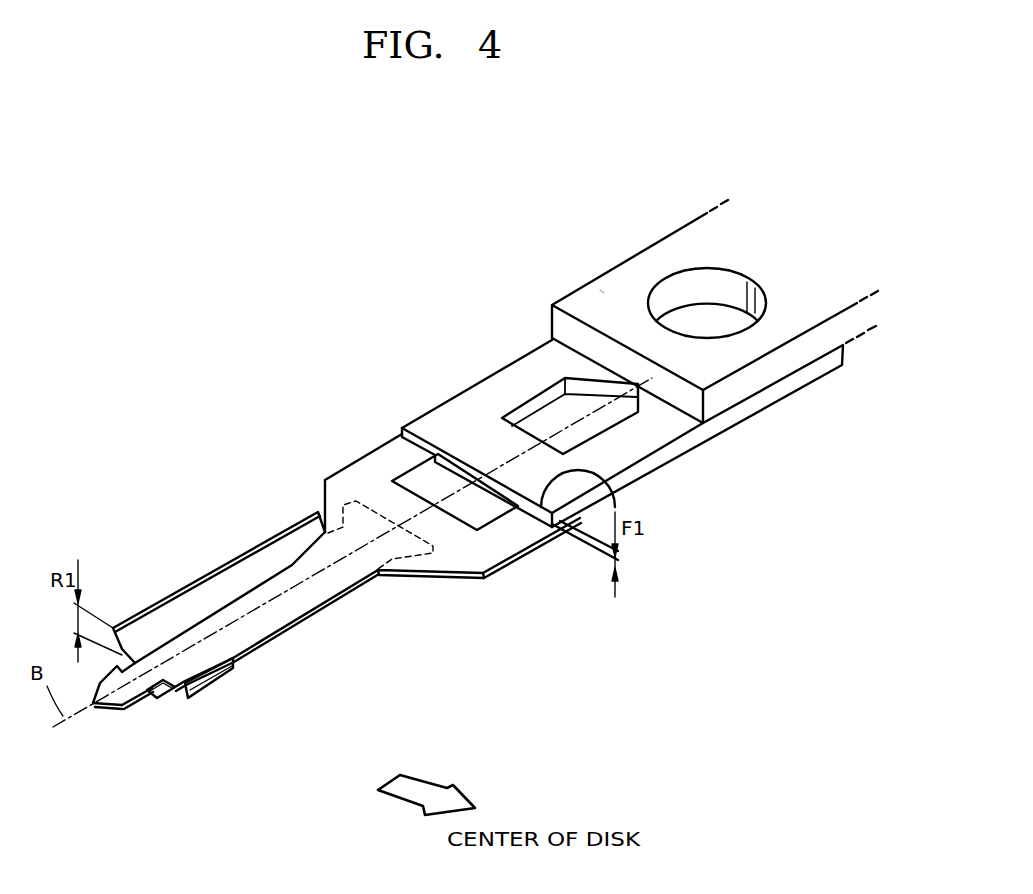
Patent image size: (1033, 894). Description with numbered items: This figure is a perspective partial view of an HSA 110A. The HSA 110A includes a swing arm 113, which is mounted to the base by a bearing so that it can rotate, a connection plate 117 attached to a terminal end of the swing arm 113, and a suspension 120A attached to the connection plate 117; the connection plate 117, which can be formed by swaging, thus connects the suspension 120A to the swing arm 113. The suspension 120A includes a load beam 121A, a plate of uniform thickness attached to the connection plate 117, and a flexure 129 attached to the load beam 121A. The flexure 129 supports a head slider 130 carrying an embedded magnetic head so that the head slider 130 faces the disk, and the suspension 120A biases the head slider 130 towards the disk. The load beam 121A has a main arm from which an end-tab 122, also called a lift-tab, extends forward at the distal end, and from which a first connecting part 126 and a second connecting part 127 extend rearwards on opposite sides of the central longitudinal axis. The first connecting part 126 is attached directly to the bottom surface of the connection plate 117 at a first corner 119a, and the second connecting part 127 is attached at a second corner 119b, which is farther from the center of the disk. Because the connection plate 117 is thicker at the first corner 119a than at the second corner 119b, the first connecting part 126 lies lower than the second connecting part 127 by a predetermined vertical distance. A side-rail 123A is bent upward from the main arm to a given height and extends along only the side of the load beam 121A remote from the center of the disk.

The HSA 110A is at (489, 284).
The swing arm 113 is at (603, 293).
The connection plate 117 is at (528, 367).
The first corner 119a is at (606, 487).
The second corner 119b is at (418, 431).
The second connecting part 127 is at (398, 457).
The suspension 120A is at (458, 600).
The load beam 121A is at (490, 556).
The side-rail 123A is at (235, 548).
The first connecting part 126 is at (512, 527).
The end-tab 122 is at (105, 705).
The flexure 129 is at (160, 702).
The head slider 130 is at (210, 690).